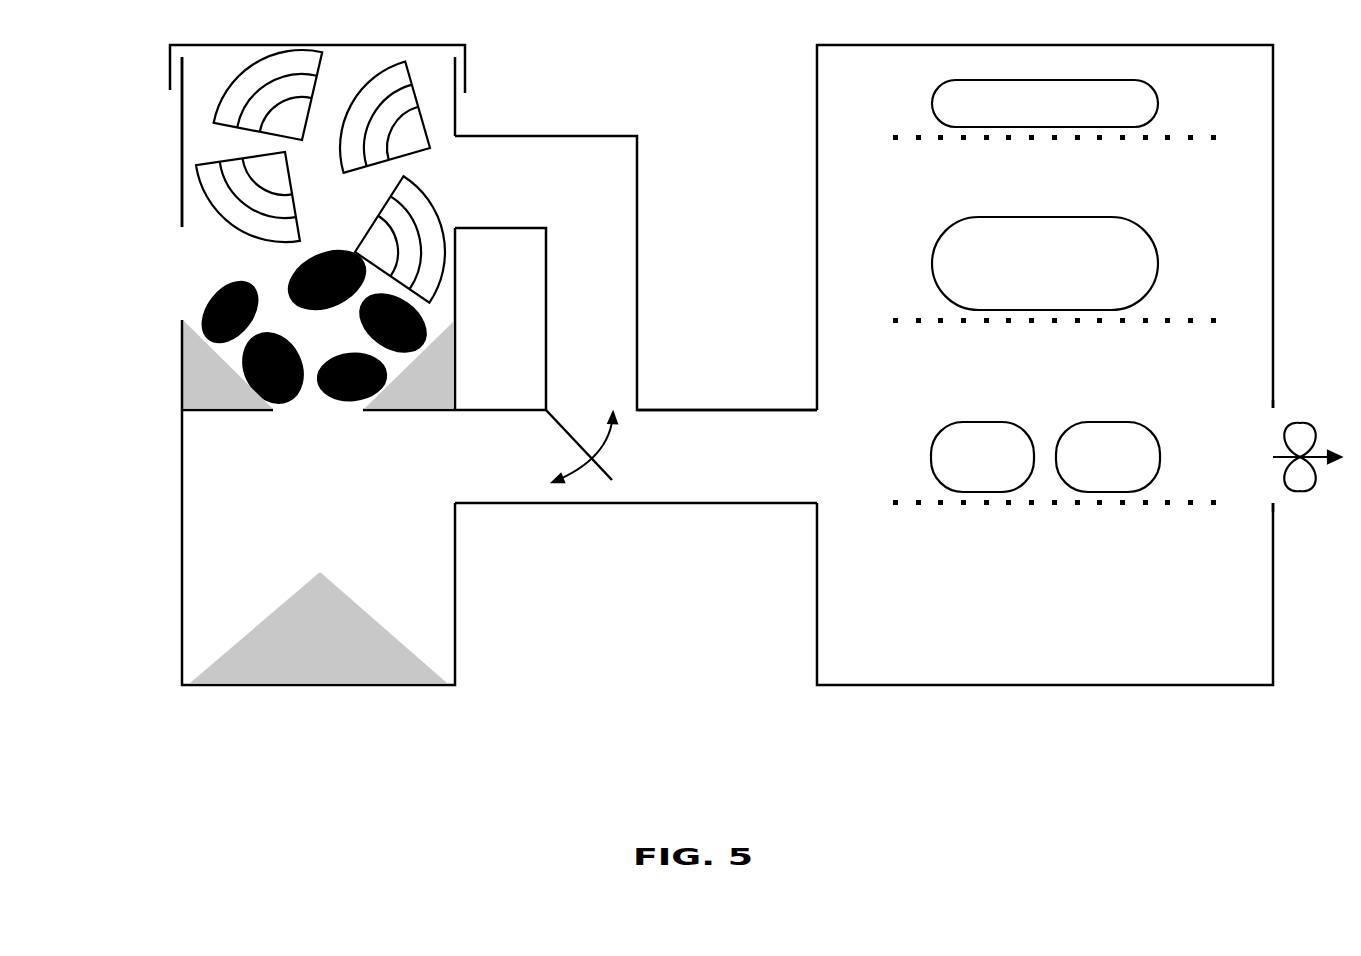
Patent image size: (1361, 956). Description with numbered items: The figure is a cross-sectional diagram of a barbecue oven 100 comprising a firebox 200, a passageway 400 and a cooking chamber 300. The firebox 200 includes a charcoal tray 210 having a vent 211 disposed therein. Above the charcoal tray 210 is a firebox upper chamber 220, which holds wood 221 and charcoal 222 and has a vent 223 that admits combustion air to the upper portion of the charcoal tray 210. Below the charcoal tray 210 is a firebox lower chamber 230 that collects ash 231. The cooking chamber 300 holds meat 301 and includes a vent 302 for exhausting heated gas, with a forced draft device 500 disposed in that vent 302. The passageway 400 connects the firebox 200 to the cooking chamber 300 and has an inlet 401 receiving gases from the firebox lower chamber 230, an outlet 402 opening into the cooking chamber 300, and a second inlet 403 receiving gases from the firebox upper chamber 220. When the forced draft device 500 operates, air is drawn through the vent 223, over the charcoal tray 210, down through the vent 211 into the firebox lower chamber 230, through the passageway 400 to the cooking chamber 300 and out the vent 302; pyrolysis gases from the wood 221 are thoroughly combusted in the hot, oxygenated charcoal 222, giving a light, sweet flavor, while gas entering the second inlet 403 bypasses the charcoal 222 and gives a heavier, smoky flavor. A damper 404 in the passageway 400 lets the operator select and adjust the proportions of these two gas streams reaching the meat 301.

The barbecue oven 100 is at (730, 388).
The firebox 200 is at (333, 389).
The charcoal tray 210 is at (227, 428).
The vent 211 is at (423, 428).
The firebox upper chamber 220 is at (287, 231).
The wood 221 is at (320, 176).
The charcoal 222 is at (314, 326).
The vent 223 is at (206, 159).
The firebox lower chamber 230 is at (287, 502).
The ash 231 is at (318, 501).
The cooking chamber 300 is at (1045, 389).
The meat 301 is at (1054, 292).
The vent 302 is at (1247, 456).
The passageway 400 is at (636, 434).
The inlet 401 is at (633, 474).
The outlet 402 is at (729, 440).
The second inlet 403 is at (633, 273).
The damper 404 is at (581, 428).
The forced draft device 500 is at (1307, 474).